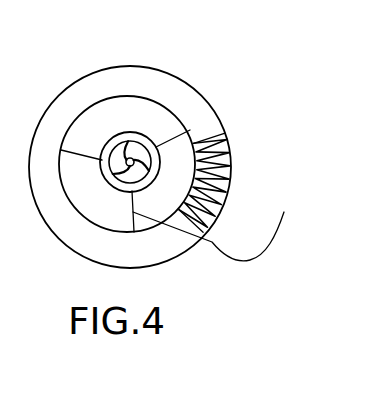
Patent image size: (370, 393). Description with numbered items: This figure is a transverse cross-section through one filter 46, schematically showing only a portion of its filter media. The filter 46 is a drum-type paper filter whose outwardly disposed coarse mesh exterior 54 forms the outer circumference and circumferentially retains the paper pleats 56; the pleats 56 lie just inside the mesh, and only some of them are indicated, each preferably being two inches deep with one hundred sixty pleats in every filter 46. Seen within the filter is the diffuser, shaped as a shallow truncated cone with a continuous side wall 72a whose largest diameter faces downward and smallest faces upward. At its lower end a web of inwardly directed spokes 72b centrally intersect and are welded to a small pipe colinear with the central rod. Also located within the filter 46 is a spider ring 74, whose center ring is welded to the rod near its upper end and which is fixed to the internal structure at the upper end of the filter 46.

The filter 46 is at (187, 70).
The coarse mesh exterior 54 is at (200, 90).
The paper pleats 56 is at (232, 170).
The continuous side wall 72a is at (110, 153).
The inwardly directed spokes 72b is at (145, 147).
The spider ring 74 is at (80, 193).